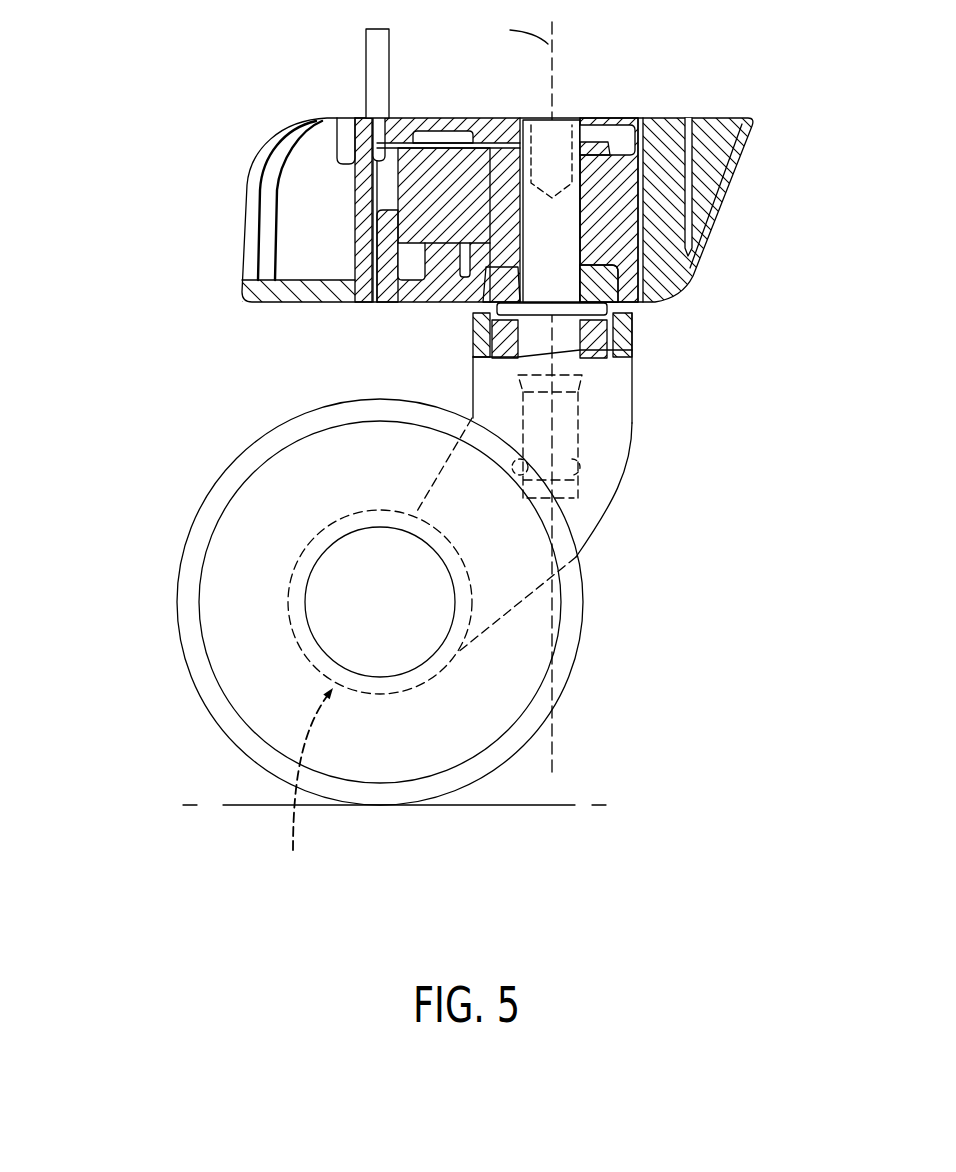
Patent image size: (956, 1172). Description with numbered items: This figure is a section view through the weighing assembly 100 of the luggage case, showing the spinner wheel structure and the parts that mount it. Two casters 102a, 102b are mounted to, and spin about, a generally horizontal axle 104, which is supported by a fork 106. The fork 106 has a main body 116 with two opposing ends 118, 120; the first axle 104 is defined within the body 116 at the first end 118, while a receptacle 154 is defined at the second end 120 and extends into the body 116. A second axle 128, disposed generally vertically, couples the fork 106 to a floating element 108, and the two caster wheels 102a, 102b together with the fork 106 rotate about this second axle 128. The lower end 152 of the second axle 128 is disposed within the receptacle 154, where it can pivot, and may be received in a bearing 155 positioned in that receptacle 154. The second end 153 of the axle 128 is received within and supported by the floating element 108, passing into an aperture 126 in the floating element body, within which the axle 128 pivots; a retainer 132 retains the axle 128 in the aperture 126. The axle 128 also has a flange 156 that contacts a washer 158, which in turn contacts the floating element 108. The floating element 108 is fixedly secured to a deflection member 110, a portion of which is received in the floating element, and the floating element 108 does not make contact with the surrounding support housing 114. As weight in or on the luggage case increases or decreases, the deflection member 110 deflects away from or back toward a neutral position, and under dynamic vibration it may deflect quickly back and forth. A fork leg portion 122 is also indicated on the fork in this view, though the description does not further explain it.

The weighing assembly 100 is at (232, 69).
The caster 102a is at (222, 728).
The caster 102b is at (380, 602).
The axle 104 is at (373, 592).
The fork 106 is at (589, 483).
The floating element 108 is at (594, 132).
The deflection member 110 is at (418, 190).
The support housing 114 is at (750, 143).
The main body 116 is at (642, 472).
The first end 118 is at (303, 785).
The second end 120 is at (617, 343).
The fork leg 122 is at (617, 501).
The aperture 126 is at (560, 238).
The second axle 128 is at (580, 197).
The retainer 132 is at (607, 135).
The lower end 152 is at (596, 336).
The second end 153 is at (580, 173).
The receptacle 154 is at (518, 375).
The bearing 155 is at (595, 330).
The flange 156 is at (493, 305).
The washer 158 is at (598, 285).